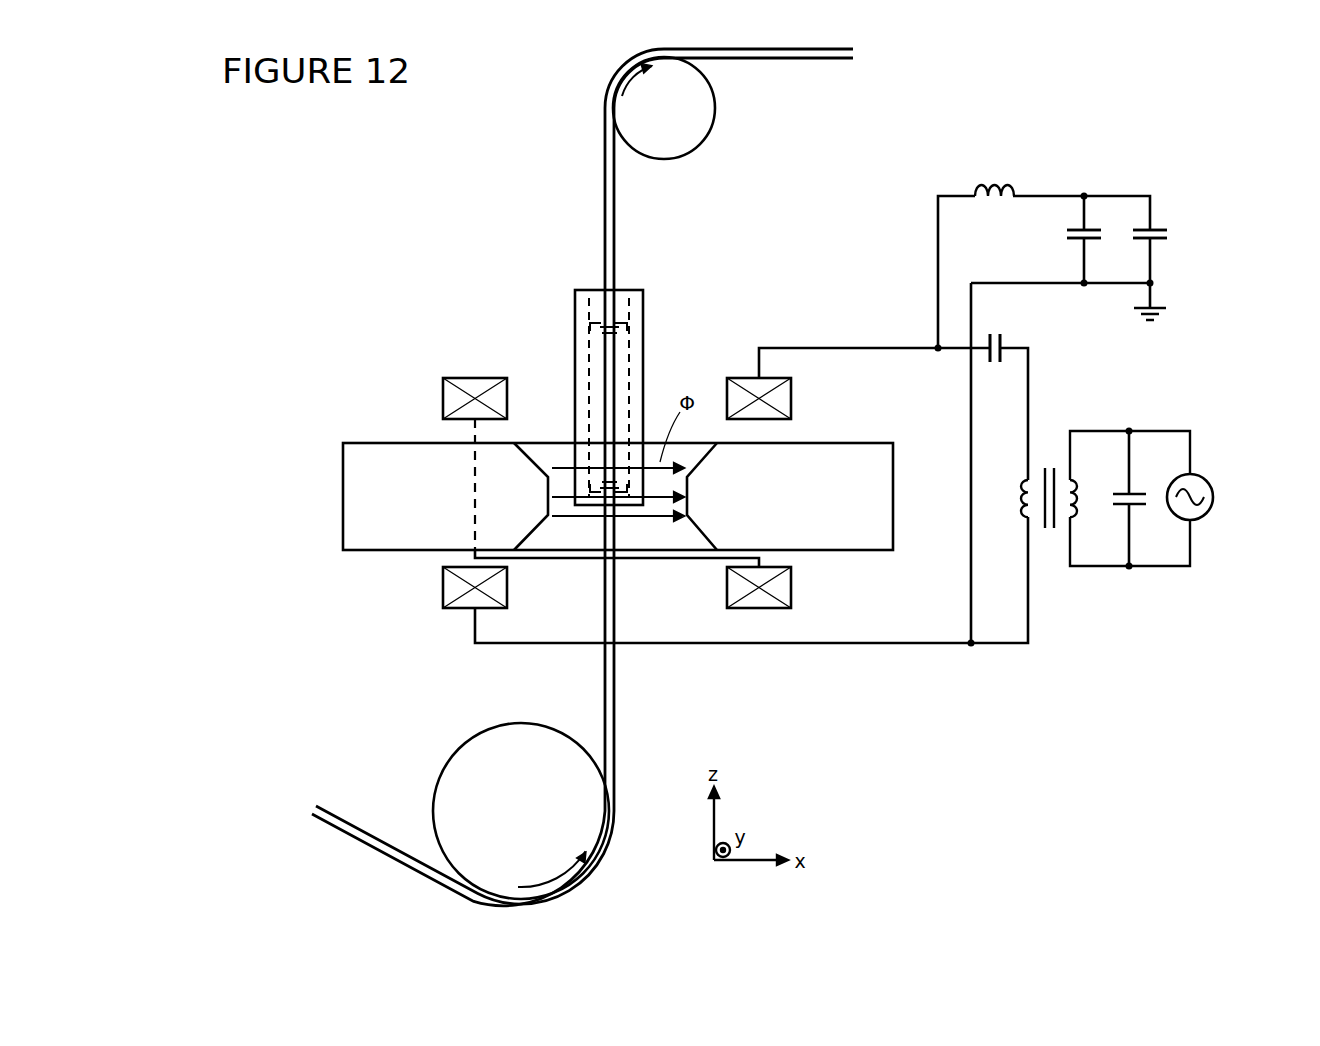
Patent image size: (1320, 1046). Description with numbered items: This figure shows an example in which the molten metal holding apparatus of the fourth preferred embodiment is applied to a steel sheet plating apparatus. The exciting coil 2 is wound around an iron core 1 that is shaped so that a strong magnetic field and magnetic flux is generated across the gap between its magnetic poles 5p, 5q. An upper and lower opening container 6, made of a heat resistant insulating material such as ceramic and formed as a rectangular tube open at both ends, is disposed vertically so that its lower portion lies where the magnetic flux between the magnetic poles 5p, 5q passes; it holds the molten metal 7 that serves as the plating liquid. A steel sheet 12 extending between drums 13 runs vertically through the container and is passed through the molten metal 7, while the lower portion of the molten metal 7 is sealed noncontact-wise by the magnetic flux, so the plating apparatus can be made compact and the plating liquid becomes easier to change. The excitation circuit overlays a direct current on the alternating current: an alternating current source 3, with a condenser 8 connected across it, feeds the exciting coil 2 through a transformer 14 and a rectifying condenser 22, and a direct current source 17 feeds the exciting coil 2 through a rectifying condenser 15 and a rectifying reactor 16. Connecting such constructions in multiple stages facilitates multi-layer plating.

The magnetic core 1 is at (375, 540).
The coil 2 is at (475, 388).
The alternating current source 3 is at (1205, 480).
The magnetic pole 5p is at (517, 496).
The magnetic pole 5q is at (711, 496).
The upper and lower opening container 6 is at (575, 345).
The molten metal 7 is at (628, 342).
The capacitor 8 is at (1139, 493).
The steel sheet 12 is at (601, 163).
The drum 13 is at (690, 118).
The transformer 14 is at (1050, 535).
The rectifying condenser 15 is at (1101, 234).
The rectifying reactor 16 is at (1005, 180).
The direct current source 17 is at (1167, 240).
The rectifying condenser 22 is at (1003, 355).